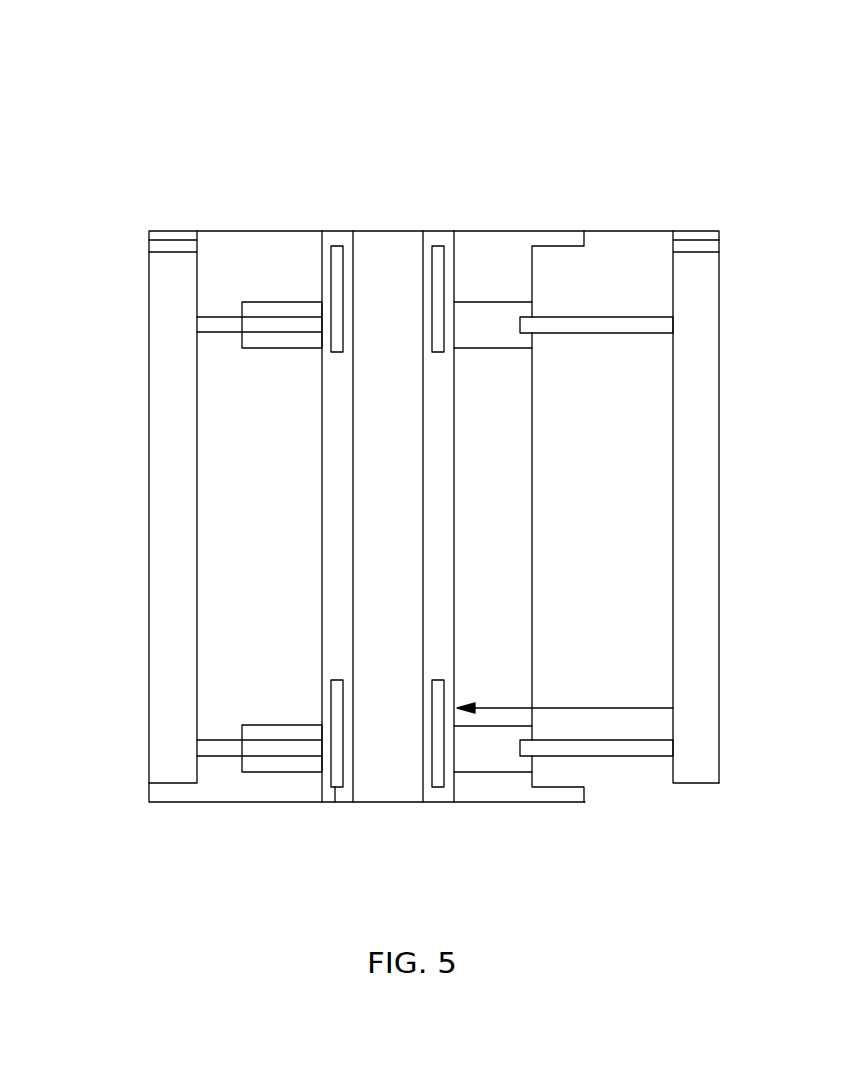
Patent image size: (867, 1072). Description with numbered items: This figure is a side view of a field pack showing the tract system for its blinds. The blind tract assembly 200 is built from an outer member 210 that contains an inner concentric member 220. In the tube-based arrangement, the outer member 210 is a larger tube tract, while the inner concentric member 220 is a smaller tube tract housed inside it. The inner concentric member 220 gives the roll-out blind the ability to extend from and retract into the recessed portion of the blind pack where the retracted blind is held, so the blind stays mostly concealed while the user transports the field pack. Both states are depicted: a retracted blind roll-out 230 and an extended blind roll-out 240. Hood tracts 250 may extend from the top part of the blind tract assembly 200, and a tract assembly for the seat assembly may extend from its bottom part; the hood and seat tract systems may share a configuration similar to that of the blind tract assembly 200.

The blind tract assembly 200 is at (676, 112).
The outer member 210 is at (288, 310).
The inner concentric member 220 is at (593, 317).
The retracted blind roll-out 230 is at (148, 555).
The extended blind roll-out 240 is at (720, 562).
The hood tracts 250 is at (445, 232).